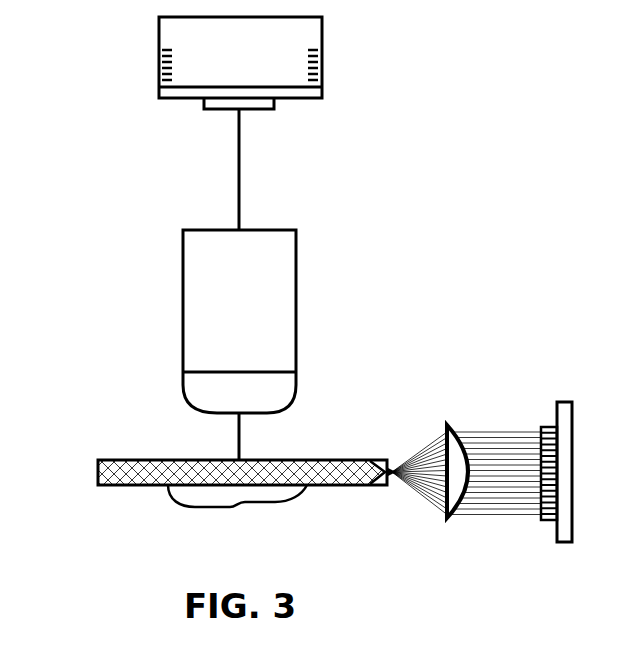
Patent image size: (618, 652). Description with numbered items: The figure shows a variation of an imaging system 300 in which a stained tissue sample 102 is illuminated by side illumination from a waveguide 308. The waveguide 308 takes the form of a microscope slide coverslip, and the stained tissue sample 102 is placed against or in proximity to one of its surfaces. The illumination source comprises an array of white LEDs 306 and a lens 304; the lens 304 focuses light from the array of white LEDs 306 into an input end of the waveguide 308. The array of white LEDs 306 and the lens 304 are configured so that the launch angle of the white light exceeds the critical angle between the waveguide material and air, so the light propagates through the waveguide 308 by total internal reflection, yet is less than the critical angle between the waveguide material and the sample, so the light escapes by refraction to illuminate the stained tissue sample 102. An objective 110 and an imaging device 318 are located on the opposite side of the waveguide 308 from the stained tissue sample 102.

The imaging system 300 is at (56, 255).
The imaging device 318 is at (240, 63).
The objective 110 is at (295, 321).
The waveguide 308 is at (125, 460).
The stained tissue sample 102 is at (190, 508).
The lens 304 is at (456, 496).
The array of white LEDs 306 is at (560, 514).